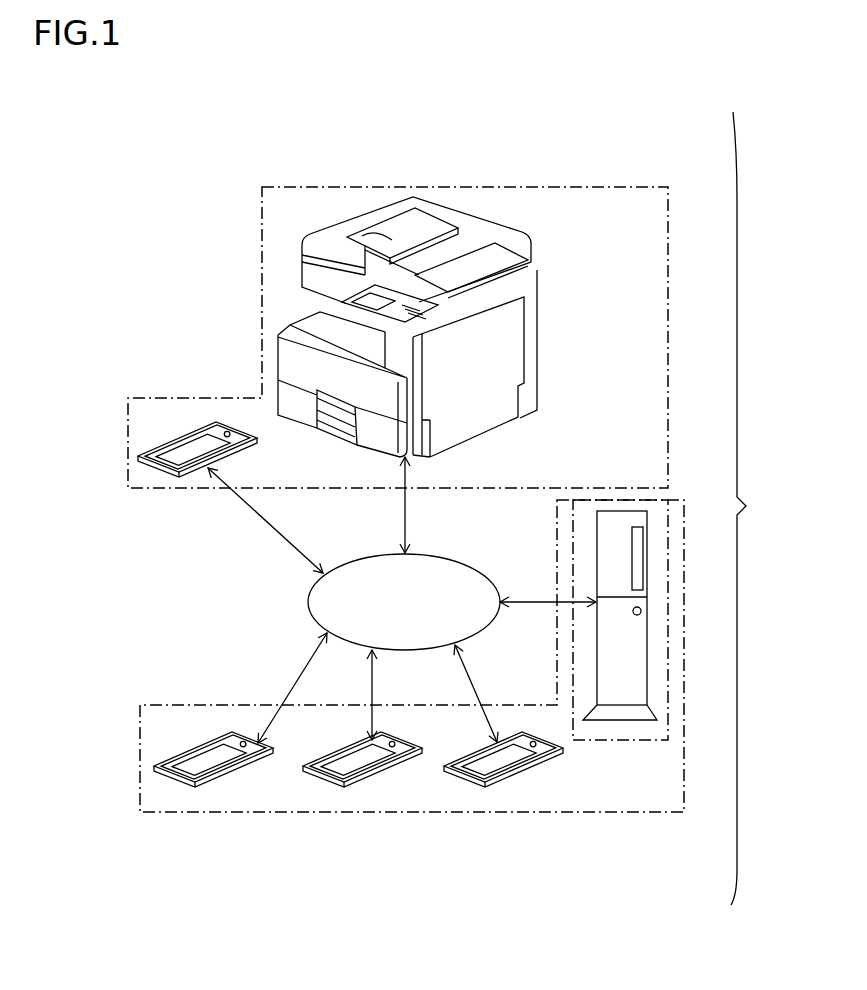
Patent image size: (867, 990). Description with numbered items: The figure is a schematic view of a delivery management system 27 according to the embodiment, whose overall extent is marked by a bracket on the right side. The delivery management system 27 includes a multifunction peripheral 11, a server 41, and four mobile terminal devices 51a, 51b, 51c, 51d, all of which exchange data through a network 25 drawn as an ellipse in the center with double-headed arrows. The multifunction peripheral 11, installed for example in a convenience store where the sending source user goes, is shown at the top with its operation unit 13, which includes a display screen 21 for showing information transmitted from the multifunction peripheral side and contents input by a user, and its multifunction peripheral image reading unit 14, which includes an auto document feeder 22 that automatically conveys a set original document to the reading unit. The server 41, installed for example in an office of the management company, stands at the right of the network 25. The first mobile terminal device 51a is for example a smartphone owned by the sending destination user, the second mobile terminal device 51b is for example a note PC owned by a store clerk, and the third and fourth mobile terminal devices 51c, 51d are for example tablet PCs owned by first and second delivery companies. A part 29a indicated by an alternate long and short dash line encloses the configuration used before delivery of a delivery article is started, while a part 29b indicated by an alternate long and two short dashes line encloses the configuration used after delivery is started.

The multifunction peripheral 11 is at (406, 292).
The operation unit 13 is at (348, 287).
The multifunction peripheral image reading unit 14 is at (583, 196).
The display screen 21 is at (300, 288).
The auto document feeder (ADF) 22 is at (466, 240).
The network 25 is at (468, 562).
The delivery management system 27 is at (757, 508).
The part indicated by an alternate long and short dash line 29a is at (600, 186).
The part indicated by an alternate long and two short dashes line 29b is at (603, 813).
The server 41 is at (653, 560).
The first mobile terminal device 51a is at (513, 778).
The second mobile terminal device 51b is at (147, 475).
The third mobile terminal device 51c is at (372, 780).
The fourth mobile terminal device 51d is at (232, 780).